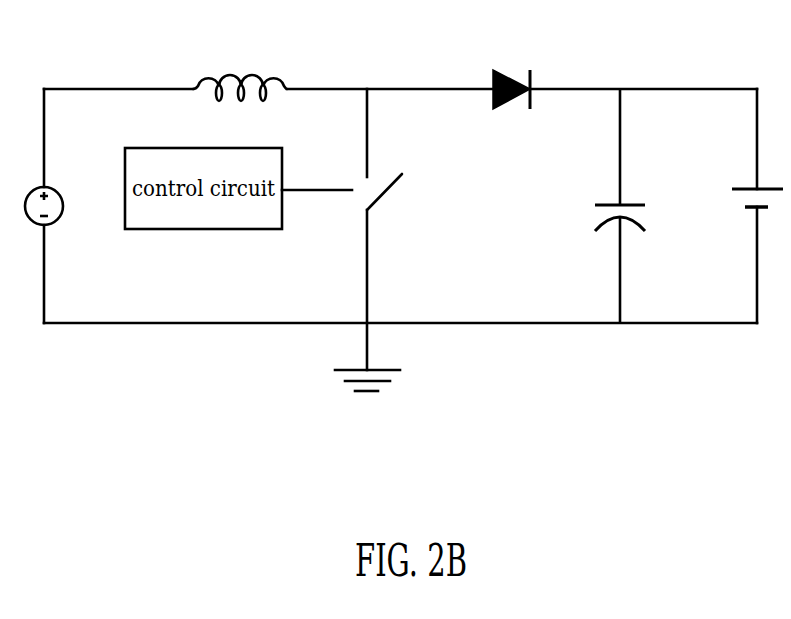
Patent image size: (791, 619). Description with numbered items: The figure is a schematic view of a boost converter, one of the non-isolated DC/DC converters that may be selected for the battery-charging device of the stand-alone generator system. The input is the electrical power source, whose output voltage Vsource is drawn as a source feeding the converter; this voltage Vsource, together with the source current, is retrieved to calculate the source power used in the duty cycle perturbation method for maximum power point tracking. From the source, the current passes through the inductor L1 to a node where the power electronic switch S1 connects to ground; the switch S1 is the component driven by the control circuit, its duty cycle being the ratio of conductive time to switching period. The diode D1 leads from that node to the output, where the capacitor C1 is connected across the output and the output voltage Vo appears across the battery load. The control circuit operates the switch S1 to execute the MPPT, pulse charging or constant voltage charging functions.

The output voltage of the electrical power source Vsource is at (74, 220).
The inductor L1 is at (240, 63).
The switch S1 is at (408, 198).
The diode D1 is at (511, 67).
The output capacitor C1 is at (596, 206).
The output voltage Vo is at (699, 123).